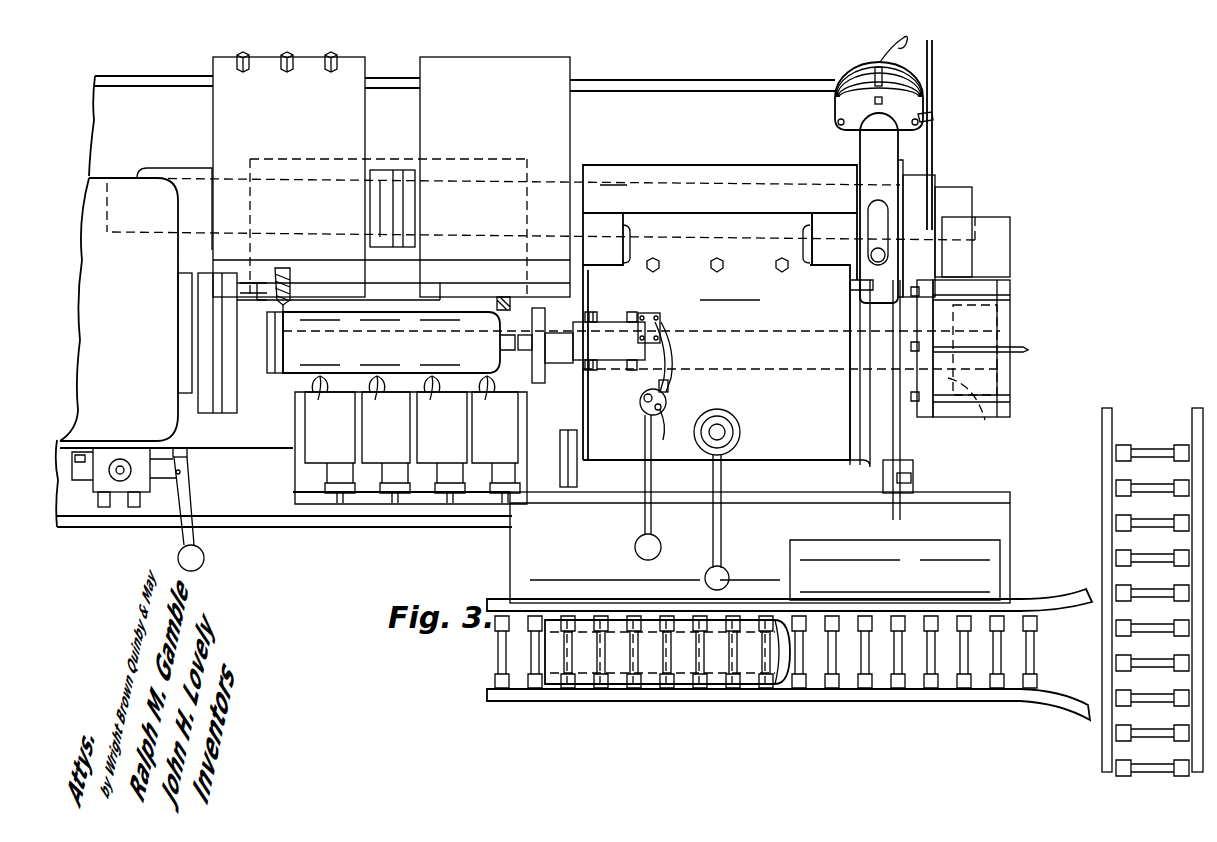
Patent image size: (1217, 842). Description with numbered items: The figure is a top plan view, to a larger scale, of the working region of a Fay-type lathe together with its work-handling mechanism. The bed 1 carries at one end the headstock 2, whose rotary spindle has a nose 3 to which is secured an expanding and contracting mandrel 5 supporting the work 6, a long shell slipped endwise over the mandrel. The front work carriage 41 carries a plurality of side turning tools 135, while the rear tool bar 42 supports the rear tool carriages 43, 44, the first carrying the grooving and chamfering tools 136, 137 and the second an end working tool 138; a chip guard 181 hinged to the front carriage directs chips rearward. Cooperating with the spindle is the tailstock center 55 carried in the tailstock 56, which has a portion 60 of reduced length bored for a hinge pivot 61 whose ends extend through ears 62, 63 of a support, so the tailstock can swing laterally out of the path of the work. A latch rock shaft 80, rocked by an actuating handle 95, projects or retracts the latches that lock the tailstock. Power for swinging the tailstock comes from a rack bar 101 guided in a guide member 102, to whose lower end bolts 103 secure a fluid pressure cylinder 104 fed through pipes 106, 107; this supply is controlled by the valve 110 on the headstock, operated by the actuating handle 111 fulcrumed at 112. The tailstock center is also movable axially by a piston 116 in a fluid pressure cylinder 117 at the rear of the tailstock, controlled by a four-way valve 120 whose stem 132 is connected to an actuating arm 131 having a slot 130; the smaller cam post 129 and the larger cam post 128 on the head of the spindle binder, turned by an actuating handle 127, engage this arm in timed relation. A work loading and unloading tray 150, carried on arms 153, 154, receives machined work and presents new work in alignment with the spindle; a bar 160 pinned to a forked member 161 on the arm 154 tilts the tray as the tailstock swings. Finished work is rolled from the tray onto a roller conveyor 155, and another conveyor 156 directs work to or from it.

The bed 1 is at (378, 515).
The headstock 2 is at (100, 291).
The nose 3 is at (186, 300).
The expanding and contracting mandrel 5 is at (215, 330).
The work 6 is at (330, 348).
The front work carriage 41 is at (312, 495).
The rear tool bar 42 is at (410, 250).
The rear tool carriage 43 is at (218, 118).
The rear tool carriage 44 is at (553, 124).
The tailstock center 55 is at (536, 348).
The tailstock 56 is at (757, 265).
The portion of reduced length 60 is at (722, 215).
The hinge pivot 61 is at (990, 237).
The ear 62 is at (830, 218).
The ear 63 is at (607, 215).
The latch rock shaft 80 is at (726, 430).
The actuating handle 95 is at (720, 538).
The rack bar 101 is at (880, 226).
The guide member 102 is at (886, 160).
The bolts 103 is at (934, 118).
The fluid pressure cylinder 104 is at (853, 83).
The pipe 106 is at (98, 503).
The pipe 107 is at (135, 503).
The valve 110 is at (128, 450).
The actuating handle 111 is at (196, 490).
The fulcrum 112 is at (185, 447).
The piston 116 is at (996, 428).
The fluid pressure cylinder 117 is at (985, 322).
The four-way valve 120 is at (610, 330).
The actuating handle 127 is at (645, 521).
The cam post 128 is at (641, 402).
The cam post 129 is at (677, 433).
The slot 130 is at (672, 387).
The actuating arm 131 is at (670, 355).
The stem 132 is at (660, 318).
The side turning tools 135 is at (365, 400).
The grooving tool 136 is at (282, 268).
The chamfering tool 137 is at (292, 272).
The end working tool 138 is at (502, 295).
The work loading and unloading tray 150 is at (522, 545).
The arm 153 is at (573, 437).
The arm 154 is at (905, 456).
The roller conveyor 155 is at (684, 697).
The conveyor 156 is at (1105, 530).
The bar 160 is at (893, 422).
The forked member 161 is at (910, 481).
The chip guard 181 is at (397, 160).